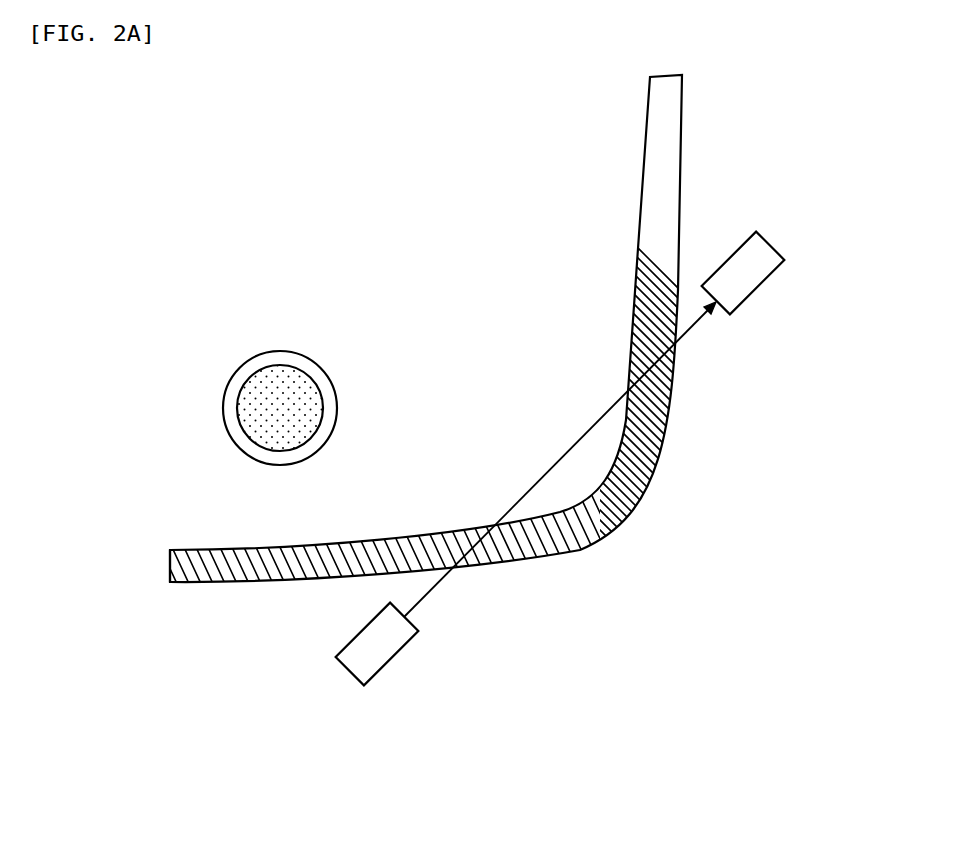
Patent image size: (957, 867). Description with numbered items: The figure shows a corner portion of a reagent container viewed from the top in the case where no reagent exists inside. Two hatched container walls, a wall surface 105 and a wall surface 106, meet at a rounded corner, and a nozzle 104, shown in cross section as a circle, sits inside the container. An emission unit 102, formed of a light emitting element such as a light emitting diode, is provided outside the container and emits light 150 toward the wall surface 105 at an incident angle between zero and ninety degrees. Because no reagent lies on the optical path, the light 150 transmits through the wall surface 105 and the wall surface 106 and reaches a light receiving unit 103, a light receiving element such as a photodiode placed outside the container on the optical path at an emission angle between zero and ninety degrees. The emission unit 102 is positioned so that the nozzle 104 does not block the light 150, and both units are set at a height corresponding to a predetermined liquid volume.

The emission unit 102 is at (388, 663).
The light receiving unit 103 is at (747, 300).
The nozzle 104 is at (227, 378).
The wall surface 105 is at (222, 585).
The wall surface 106 is at (681, 207).
The light 150 is at (428, 597).